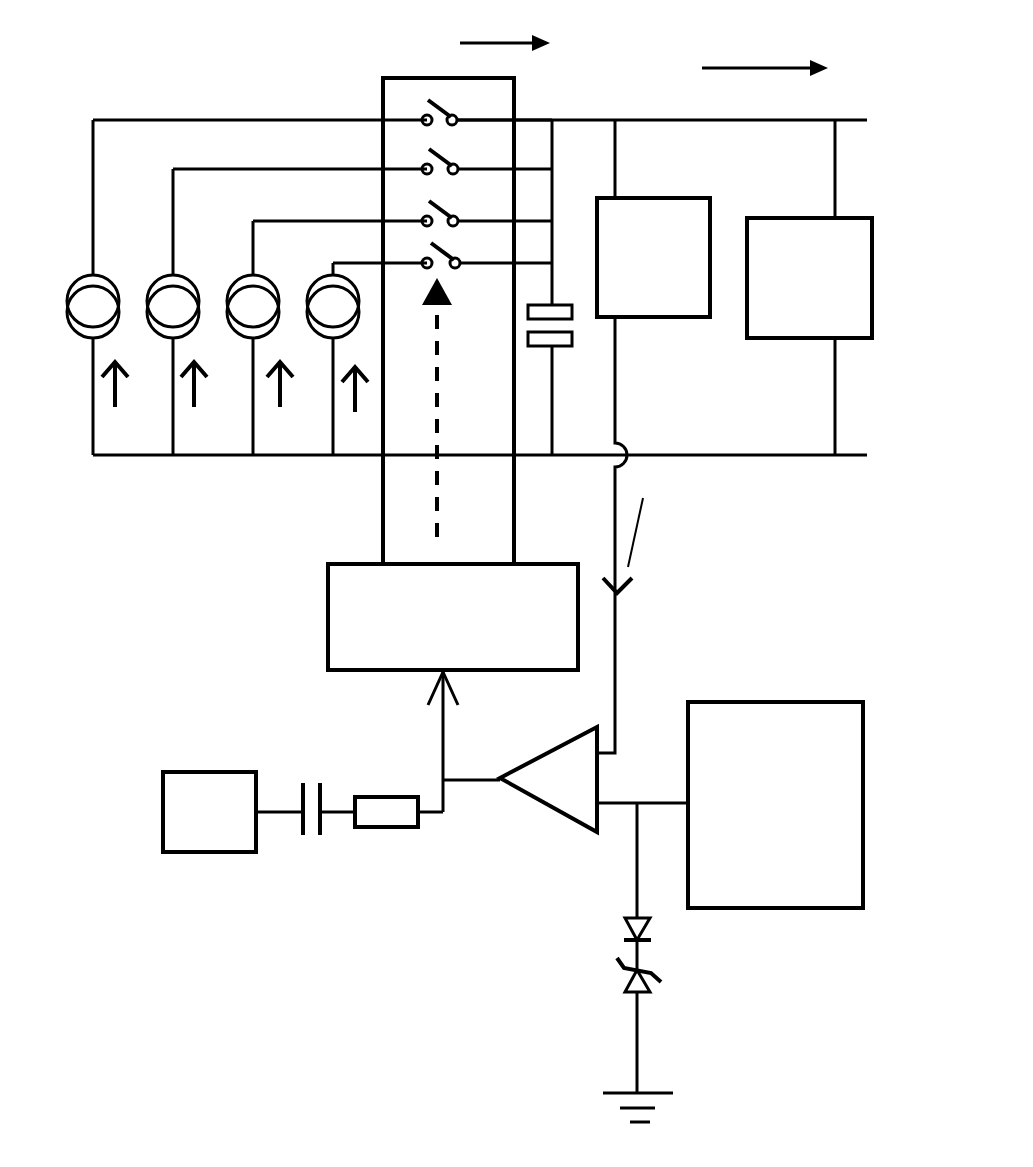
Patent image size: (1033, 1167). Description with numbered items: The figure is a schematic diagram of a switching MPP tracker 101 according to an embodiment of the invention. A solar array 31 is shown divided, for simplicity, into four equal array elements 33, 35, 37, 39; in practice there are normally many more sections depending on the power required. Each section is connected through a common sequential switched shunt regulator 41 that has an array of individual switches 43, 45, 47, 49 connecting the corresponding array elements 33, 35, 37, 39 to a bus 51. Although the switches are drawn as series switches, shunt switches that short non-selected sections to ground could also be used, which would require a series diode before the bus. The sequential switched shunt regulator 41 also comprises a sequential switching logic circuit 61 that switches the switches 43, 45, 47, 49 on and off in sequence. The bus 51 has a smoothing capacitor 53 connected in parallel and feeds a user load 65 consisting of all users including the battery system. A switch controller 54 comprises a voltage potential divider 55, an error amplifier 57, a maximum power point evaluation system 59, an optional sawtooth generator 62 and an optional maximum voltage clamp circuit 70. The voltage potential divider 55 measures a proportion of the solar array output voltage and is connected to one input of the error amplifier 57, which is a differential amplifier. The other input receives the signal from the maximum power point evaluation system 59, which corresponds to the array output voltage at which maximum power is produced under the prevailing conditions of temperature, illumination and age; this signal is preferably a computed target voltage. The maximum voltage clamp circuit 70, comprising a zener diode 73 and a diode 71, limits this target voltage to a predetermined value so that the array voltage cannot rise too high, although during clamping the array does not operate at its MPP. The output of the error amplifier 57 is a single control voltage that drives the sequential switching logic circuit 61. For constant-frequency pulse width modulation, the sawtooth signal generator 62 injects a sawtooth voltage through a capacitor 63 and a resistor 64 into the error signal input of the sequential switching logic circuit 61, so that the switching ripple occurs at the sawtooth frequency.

The solar array 31 is at (215, 181).
The array element 33 is at (96, 287).
The array element 35 is at (178, 312).
The array element 37 is at (258, 338).
The array element 39 is at (330, 347).
The sequential switched shunt regulator 41 is at (403, 103).
The switch 43 is at (487, 104).
The switch 45 is at (487, 152).
The switch 47 is at (487, 202).
The switch 49 is at (487, 244).
The bus 51 is at (595, 113).
The smoothing capacitor 53 is at (580, 335).
The switch controller 54 is at (351, 924).
The voltage potential divider 55 is at (685, 305).
The error amplifier 57 is at (540, 775).
The maximum power point evaluation system 59 is at (788, 883).
The sequential switching logic circuit 61 is at (332, 613).
The sawtooth signal generator 62 is at (218, 813).
The capacitor 63 is at (312, 832).
The resistor 64 is at (392, 815).
The user load 65 is at (812, 327).
The maximum voltage clamp circuit 70 is at (569, 1033).
The diode 71 is at (657, 925).
The zener diode 73 is at (662, 990).
The switching MPP tracker 101 is at (218, 583).